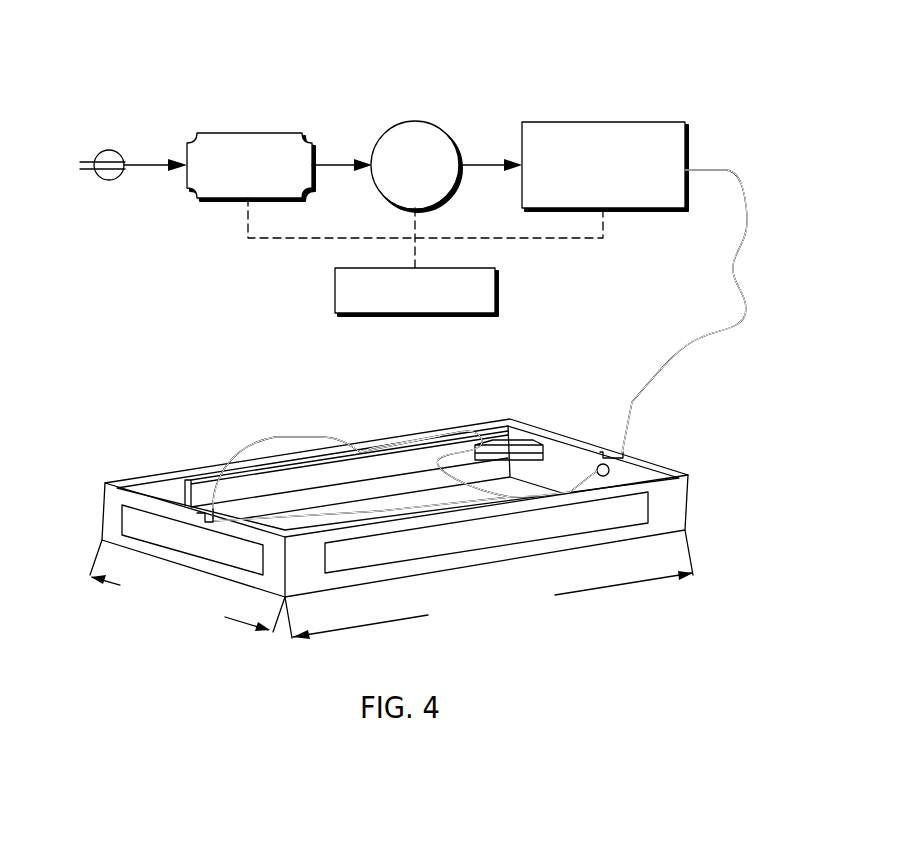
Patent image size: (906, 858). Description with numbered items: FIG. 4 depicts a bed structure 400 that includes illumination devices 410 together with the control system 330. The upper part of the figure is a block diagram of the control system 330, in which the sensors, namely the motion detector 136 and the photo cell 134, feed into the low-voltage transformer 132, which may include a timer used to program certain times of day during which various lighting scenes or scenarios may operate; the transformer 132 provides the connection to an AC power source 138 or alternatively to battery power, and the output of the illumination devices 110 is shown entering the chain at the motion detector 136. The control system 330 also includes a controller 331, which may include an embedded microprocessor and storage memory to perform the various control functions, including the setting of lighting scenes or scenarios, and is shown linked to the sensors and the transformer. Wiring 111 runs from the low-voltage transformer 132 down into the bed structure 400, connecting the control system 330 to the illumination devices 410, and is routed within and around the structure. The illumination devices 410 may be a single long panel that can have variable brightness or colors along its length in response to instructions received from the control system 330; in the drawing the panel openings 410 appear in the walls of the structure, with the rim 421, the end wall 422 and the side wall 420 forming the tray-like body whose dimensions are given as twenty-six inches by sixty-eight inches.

The illumination devices 110 is at (121, 187).
The wiring 111 is at (733, 293).
The low-voltage transformer 132 is at (603, 122).
The photo cell 134 is at (415, 122).
The motion detector 136 is at (248, 133).
The AC power source 138 is at (109, 150).
The control system 330 is at (165, 90).
The controller 331 is at (496, 290).
The bed structure 400 is at (174, 425).
The illumination devices 410 is at (200, 540).
The front side wall 420 is at (667, 503).
The top rim 421 is at (157, 476).
The end wall 422 is at (112, 512).